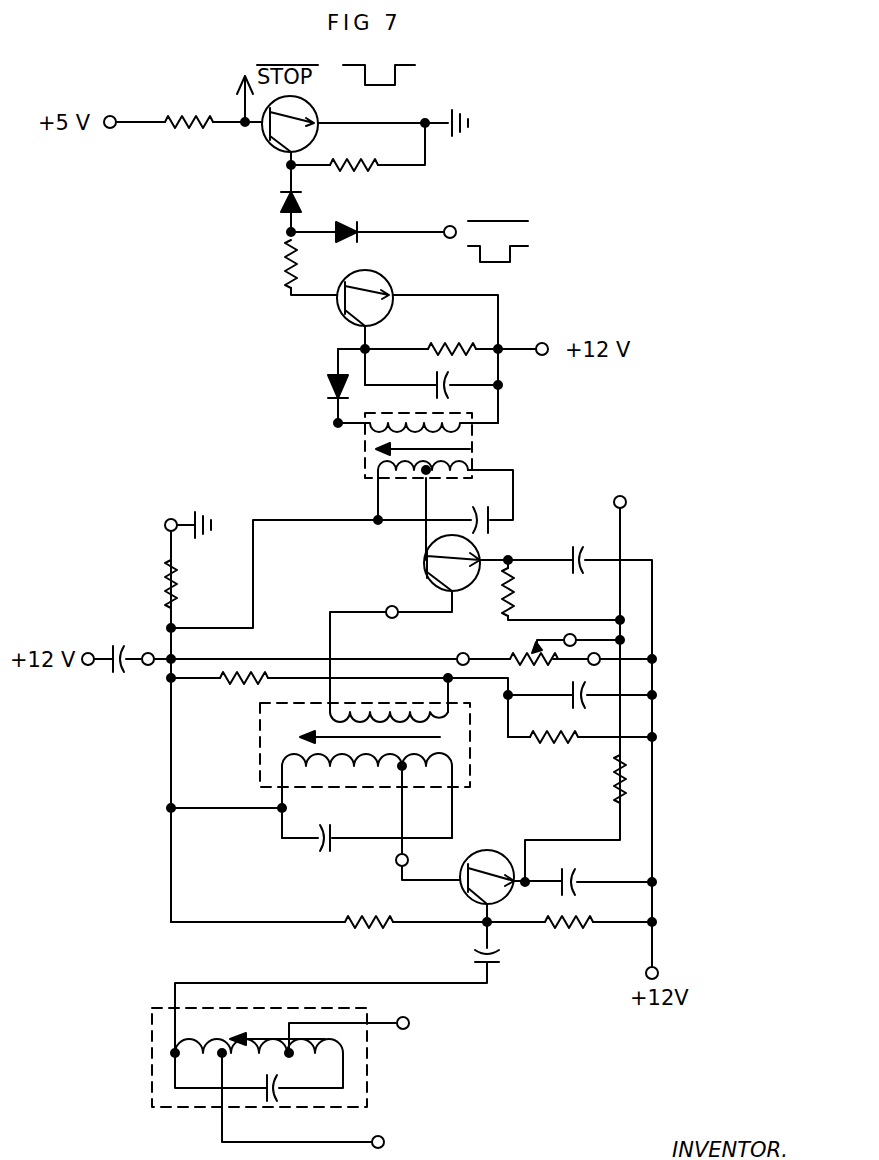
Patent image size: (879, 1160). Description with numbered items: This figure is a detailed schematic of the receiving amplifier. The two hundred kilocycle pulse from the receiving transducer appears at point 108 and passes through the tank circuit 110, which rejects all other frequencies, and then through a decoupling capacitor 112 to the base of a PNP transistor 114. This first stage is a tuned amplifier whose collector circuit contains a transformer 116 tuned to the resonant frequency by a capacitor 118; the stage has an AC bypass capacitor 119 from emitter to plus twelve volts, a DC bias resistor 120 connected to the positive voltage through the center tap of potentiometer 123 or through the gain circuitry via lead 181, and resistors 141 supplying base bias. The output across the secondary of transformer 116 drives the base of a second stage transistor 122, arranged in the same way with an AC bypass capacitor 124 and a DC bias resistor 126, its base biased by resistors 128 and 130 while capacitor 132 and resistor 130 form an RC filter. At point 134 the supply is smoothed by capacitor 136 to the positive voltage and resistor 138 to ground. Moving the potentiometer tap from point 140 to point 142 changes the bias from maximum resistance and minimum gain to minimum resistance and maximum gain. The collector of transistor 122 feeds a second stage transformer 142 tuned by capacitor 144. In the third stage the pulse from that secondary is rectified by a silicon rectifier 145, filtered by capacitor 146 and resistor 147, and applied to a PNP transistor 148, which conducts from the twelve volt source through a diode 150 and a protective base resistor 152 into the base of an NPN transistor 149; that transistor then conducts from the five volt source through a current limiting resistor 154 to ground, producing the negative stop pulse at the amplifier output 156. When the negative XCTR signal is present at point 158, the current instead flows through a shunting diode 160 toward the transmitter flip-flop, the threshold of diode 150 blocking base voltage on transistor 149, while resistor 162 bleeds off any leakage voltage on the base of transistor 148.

The point 108 is at (382, 1135).
The tank circuit 110 is at (150, 1046).
The decoupling capacitor 112 is at (498, 958).
The PNP transistor 114 is at (470, 852).
The transformer 116 is at (318, 790).
The capacitor 118 is at (318, 852).
The AC bypass capacitor 119 is at (578, 874).
The DC bias resistor 120 is at (615, 792).
The second stage transistor 122 is at (476, 560).
The potentiometer 123 is at (523, 665).
The AC bypass capacitor 124 is at (575, 548).
The DC bias resistor 126 is at (505, 602).
The biasing resistor 128 is at (243, 686).
The biasing resistor 130 is at (560, 745).
The capacitor 132 is at (590, 702).
The point 134 is at (165, 655).
The capacitor 136 is at (121, 676).
The resistor 138 is at (165, 600).
The point 140 is at (460, 652).
The resistors 141 is at (372, 930).
The second stage transformer 142 is at (363, 456).
The capacitor 144 is at (492, 518).
The silicon rectifier 145 is at (328, 385).
The capacitor 146 is at (452, 385).
The resistor 147 is at (432, 345).
The PNP transistor 148 is at (393, 288).
The NPN transistor 149 is at (312, 112).
The diode 150 is at (280, 210).
The base resistor 152 is at (285, 272).
The current limiting resistor 154 is at (212, 120).
The amplifier output 156 is at (418, 69).
The point 158 is at (445, 226).
The shunting diode 160 is at (362, 238).
The resistor 162 is at (360, 172).
The lead 181 is at (623, 542).